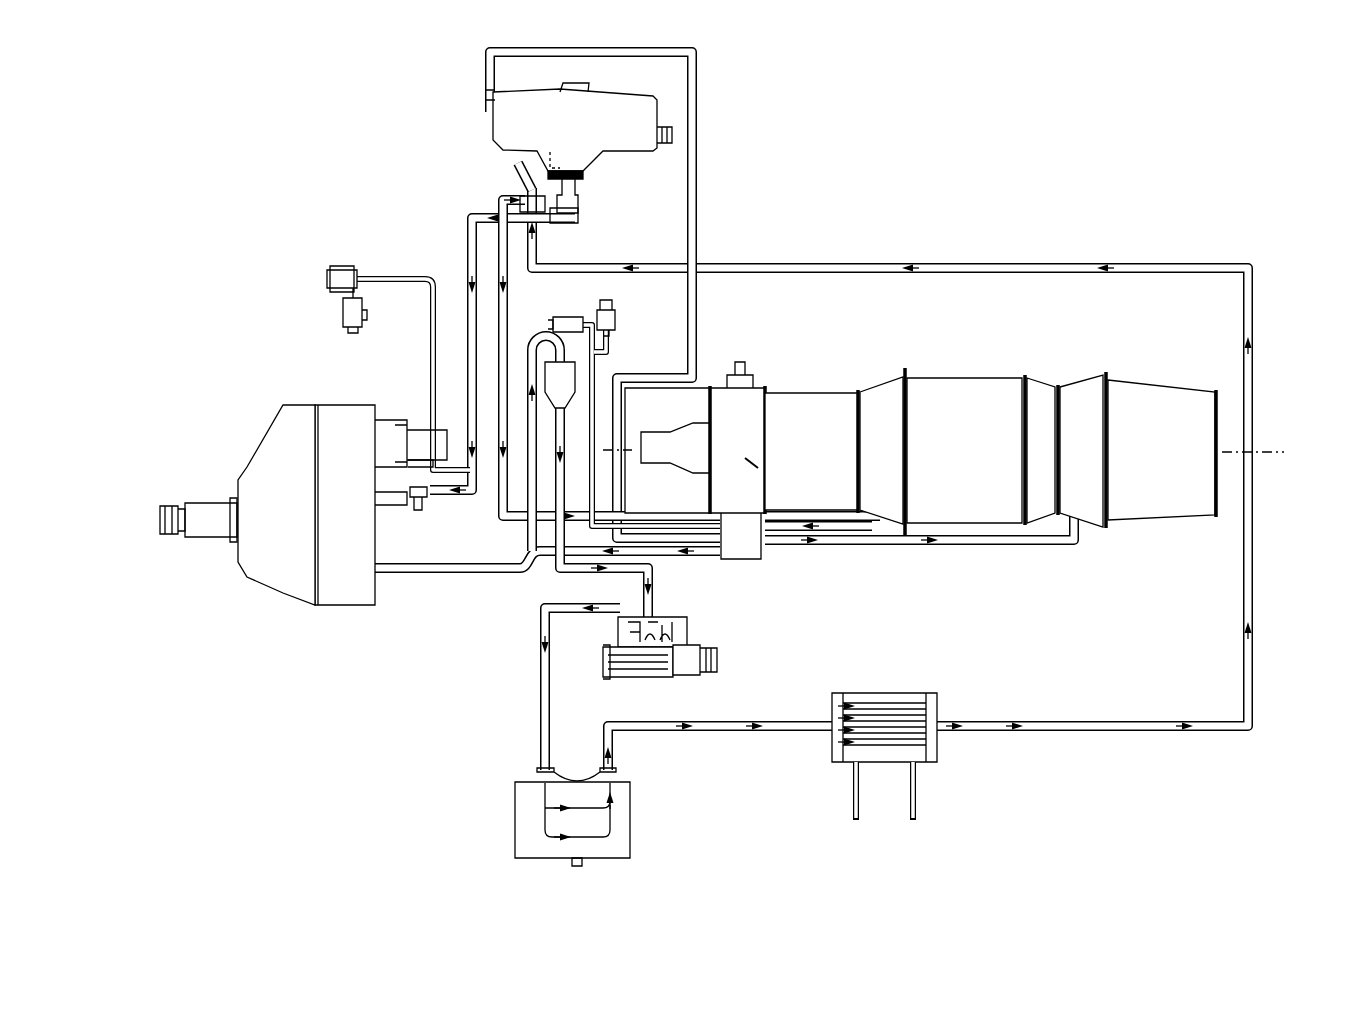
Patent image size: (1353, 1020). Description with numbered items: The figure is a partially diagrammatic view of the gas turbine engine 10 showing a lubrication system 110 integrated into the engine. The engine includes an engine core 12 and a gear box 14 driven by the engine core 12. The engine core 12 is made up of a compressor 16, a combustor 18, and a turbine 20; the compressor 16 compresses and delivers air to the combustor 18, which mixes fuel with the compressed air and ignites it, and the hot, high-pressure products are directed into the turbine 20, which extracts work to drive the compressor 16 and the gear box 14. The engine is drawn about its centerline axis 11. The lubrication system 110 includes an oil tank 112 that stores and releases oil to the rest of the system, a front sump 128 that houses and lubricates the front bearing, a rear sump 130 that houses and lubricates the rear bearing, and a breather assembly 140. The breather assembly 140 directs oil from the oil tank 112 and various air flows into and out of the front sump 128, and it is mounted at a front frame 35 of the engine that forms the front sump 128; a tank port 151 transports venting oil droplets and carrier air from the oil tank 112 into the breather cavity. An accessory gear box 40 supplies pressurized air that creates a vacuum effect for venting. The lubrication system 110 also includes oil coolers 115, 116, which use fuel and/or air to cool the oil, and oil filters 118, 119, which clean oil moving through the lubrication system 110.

The gas turbine engine 10 is at (1025, 198).
The engine centerline axis 11 is at (1275, 448).
The engine core 12 is at (920, 444).
The gear box 14 is at (283, 598).
The compressor 16 is at (822, 412).
The combustor 18 is at (960, 412).
The turbine 20 is at (1079, 421).
The front frame 35 is at (742, 430).
The accessory gear box 40 is at (740, 548).
The lubrication system 110 is at (908, 253).
The oil tank 112 is at (485, 120).
The oil cooler 115 is at (730, 656).
The oil cooler 116 is at (940, 700).
The oil filter 118 is at (600, 380).
The oil filter 119 is at (508, 820).
The front sump 128 is at (752, 455).
The rear sump 130 is at (1092, 458).
The breather assembly 140 is at (757, 368).
The tank port 151 is at (735, 366).